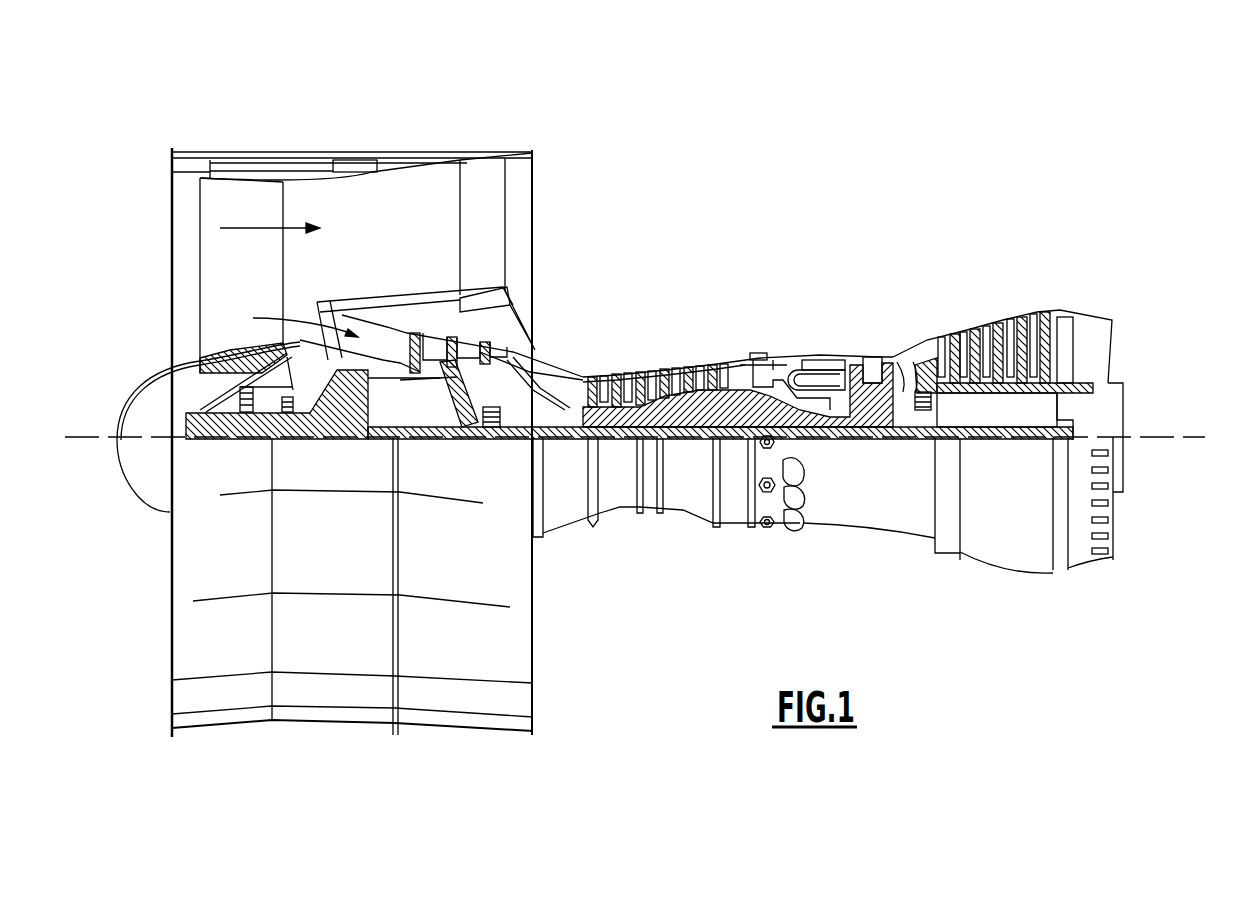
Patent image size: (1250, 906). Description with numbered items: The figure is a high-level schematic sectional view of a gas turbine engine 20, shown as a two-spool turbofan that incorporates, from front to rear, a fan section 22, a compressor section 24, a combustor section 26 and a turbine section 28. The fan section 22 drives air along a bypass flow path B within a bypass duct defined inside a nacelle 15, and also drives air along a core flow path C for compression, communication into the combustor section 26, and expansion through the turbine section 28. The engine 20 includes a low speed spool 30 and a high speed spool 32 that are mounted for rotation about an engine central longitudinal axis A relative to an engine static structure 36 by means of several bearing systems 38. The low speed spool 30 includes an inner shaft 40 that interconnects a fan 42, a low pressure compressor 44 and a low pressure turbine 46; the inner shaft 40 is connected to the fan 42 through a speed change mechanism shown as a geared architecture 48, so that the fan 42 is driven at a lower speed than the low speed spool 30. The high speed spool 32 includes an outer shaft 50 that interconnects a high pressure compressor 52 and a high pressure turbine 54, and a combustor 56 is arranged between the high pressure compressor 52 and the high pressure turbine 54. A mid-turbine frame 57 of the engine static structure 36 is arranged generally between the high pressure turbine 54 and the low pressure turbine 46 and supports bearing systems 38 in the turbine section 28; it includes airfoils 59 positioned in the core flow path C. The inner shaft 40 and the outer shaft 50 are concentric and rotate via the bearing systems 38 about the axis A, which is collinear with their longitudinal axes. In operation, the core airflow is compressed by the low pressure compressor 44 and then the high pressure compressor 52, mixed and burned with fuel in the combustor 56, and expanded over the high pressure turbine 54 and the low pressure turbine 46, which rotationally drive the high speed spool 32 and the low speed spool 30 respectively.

The nacelle 15 is at (355, 157).
The gas turbine engine 20 is at (651, 409).
The fan section 22 is at (325, 409).
The compressor section 24 is at (596, 348).
The combustor section 26 is at (801, 342).
The turbine section 28 is at (993, 404).
The low speed spool 30 is at (692, 445).
The high speed spool 32 is at (731, 407).
The engine static structure 36 is at (733, 530).
The bearing systems 38 is at (487, 423).
The inner shaft 40 is at (553, 440).
The fan 42 is at (256, 283).
The low pressure compressor 44 is at (455, 345).
The low pressure turbine 46 is at (995, 320).
The geared architecture 48 is at (357, 425).
The outer shaft 50 is at (822, 427).
The high pressure compressor 52 is at (667, 405).
The high pressure turbine 54 is at (872, 358).
The combustor 56 is at (805, 380).
The mid-turbine frame 57 is at (975, 347).
The airfoils 59 is at (913, 373).
The engine central longitudinal axis A is at (1207, 437).
The bypass flow path B is at (253, 228).
The core flow path C is at (296, 321).